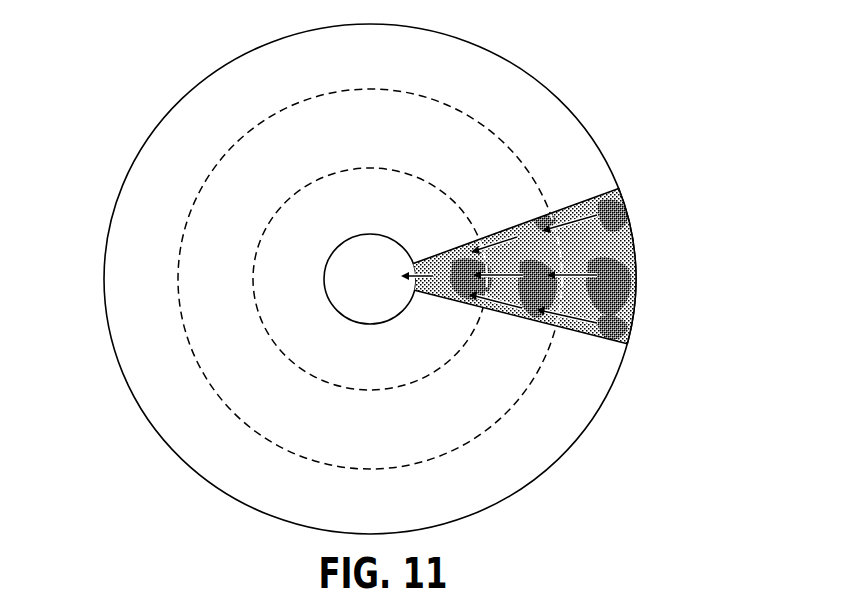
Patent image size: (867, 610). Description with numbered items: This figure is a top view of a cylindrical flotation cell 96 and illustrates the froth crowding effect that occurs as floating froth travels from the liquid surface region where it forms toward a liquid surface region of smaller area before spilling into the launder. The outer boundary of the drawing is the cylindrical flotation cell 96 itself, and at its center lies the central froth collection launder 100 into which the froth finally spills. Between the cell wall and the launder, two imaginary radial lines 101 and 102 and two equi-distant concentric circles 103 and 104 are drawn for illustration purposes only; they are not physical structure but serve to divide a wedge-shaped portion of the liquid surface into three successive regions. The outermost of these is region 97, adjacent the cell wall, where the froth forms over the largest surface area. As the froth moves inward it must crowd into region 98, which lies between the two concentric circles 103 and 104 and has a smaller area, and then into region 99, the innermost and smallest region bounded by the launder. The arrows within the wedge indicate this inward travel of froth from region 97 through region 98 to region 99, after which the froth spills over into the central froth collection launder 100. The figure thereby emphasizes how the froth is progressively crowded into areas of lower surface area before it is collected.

The cylindrical flotation cell 96 is at (587, 427).
The region 97 is at (600, 258).
The region 98 is at (527, 240).
The region 99 is at (443, 263).
The central froth collection launder 100 is at (396, 240).
The imaginary radial line 101 is at (600, 343).
The imaginary radial line 102 is at (588, 200).
The equi-distant concentric circle 103 is at (283, 355).
The equi-distant concentric circle 104 is at (272, 442).